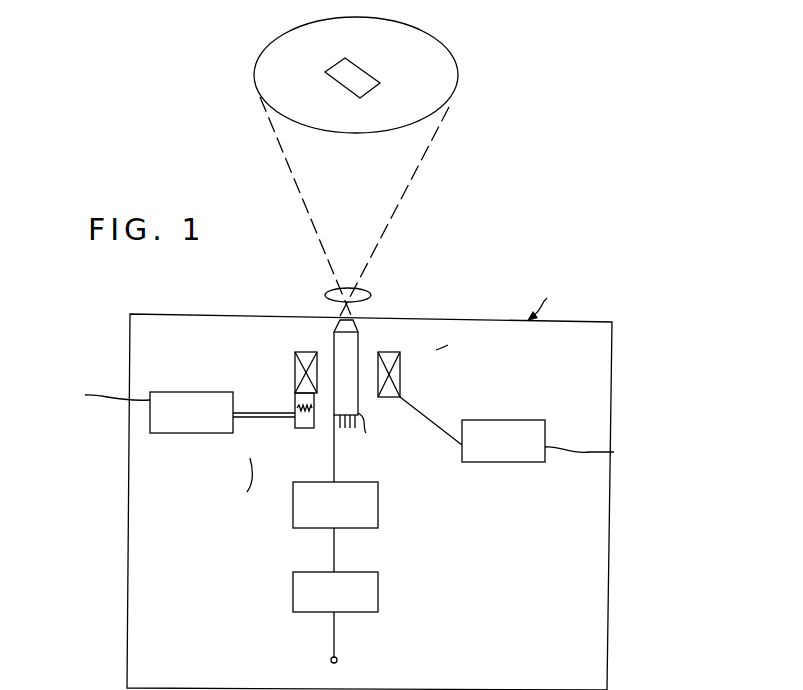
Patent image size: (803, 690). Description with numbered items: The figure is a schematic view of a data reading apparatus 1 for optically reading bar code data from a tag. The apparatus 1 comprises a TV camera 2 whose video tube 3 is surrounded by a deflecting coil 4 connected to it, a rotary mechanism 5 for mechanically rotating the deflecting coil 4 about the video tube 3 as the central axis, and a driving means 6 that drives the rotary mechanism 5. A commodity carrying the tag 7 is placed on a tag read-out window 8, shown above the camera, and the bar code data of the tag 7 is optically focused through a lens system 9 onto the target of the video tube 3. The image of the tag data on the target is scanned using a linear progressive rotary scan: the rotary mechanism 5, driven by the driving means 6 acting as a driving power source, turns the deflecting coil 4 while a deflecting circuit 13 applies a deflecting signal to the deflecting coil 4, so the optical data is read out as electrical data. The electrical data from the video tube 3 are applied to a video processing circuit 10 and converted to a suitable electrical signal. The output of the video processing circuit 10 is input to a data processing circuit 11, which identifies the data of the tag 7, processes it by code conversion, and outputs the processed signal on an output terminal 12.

The data reading apparatus 1 is at (476, 222).
The TV camera 2 is at (500, 318).
The video tube 3 is at (360, 347).
The deflecting coil 4 is at (400, 372).
The rotary mechanism 5 is at (295, 420).
The driving means 6 is at (182, 392).
The tag 7 is at (368, 75).
The tag read-out window 8 is at (458, 72).
The lens system 9 is at (372, 289).
The video processing circuit 10 is at (378, 505).
The data processing circuit 11 is at (378, 595).
The output terminal 12 is at (337, 660).
The deflecting circuit 13 is at (490, 420).